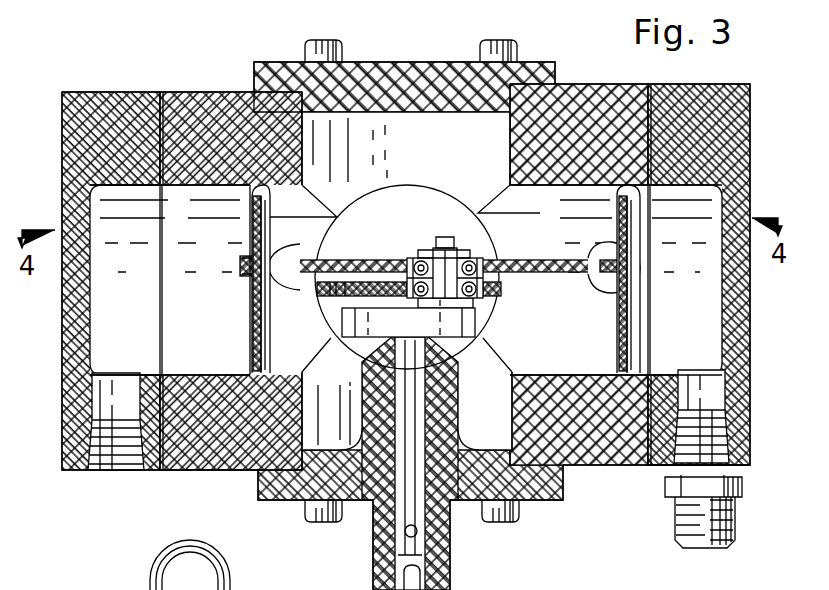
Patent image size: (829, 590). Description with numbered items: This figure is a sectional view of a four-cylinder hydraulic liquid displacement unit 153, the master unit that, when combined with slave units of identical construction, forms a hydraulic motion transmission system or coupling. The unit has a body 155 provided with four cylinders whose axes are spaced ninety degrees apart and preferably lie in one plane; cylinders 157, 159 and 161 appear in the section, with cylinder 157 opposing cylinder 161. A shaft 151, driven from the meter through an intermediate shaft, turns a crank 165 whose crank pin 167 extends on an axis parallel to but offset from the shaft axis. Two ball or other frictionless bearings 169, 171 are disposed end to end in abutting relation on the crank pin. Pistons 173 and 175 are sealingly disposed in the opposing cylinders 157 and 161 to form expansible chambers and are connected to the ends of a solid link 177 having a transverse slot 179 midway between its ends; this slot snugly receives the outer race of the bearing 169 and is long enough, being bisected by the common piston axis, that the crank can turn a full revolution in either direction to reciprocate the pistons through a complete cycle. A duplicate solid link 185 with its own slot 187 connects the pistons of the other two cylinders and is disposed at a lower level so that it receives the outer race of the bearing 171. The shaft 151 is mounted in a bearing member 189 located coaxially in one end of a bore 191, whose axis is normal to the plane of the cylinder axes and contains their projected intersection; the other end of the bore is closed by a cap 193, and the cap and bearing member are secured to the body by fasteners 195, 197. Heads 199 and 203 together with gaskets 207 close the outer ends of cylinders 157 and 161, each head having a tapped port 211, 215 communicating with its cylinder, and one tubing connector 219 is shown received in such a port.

The shaft 151 is at (422, 545).
The liquid displacement unit 153 is at (206, 90).
The body 155 is at (594, 96).
The cylinder 157 is at (525, 192).
The cylinder 159 is at (408, 187).
The cylinder 161 is at (188, 187).
The crank 165 is at (360, 320).
The crank pin 167 is at (446, 237).
The bearing 169 is at (478, 258).
The bearing 171 is at (488, 302).
The piston 173 is at (630, 300).
The piston 175 is at (252, 300).
The solid link 177 is at (583, 262).
The slot 179 is at (405, 262).
The solid link 185 is at (501, 290).
The slot 187 is at (330, 296).
The bearing member 189 is at (563, 487).
The bore 191 is at (510, 128).
The cap 193 is at (398, 62).
The fasteners 195 is at (502, 40).
The fasteners 197 is at (520, 513).
The head 199 is at (742, 335).
The head 203 is at (75, 335).
The gaskets 207 is at (160, 314).
The port 211 is at (720, 392).
The port 215 is at (100, 476).
The tubing connector 219 is at (742, 519).